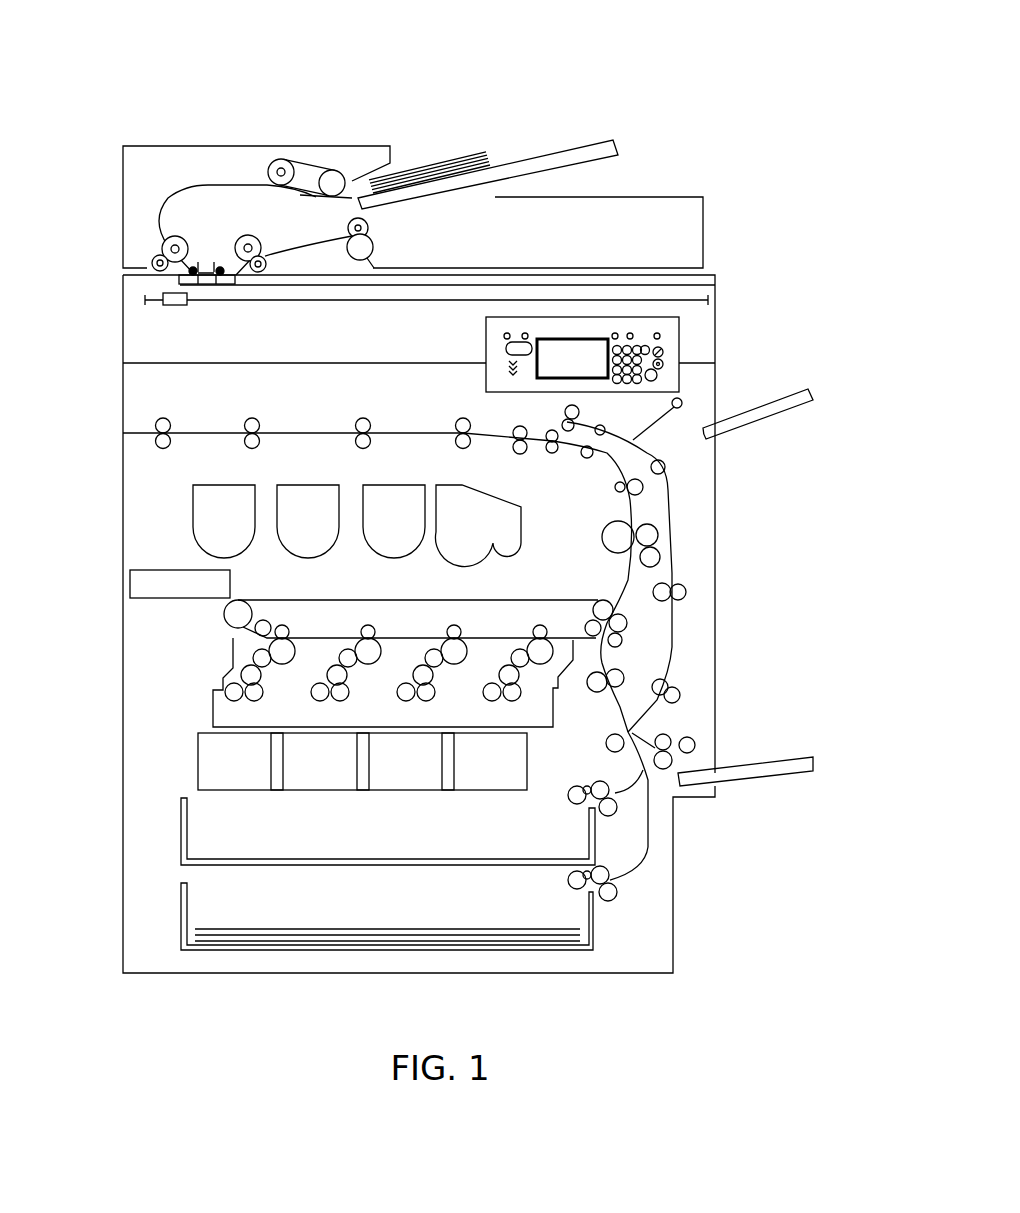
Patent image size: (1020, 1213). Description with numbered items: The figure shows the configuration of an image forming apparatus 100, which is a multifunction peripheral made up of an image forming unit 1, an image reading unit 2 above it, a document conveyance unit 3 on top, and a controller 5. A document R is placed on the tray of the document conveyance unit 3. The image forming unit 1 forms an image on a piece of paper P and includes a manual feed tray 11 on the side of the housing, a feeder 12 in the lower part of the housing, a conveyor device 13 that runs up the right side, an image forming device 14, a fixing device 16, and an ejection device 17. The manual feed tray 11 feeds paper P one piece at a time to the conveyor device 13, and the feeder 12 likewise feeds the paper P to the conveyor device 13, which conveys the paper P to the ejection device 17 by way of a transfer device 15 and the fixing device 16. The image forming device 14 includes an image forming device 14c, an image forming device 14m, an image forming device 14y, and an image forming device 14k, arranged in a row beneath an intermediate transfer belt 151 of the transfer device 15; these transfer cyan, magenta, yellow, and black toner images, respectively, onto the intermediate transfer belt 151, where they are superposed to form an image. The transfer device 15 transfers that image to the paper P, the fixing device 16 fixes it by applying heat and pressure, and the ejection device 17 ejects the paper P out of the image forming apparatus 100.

The image forming apparatus 100 is at (627, 82).
The image forming unit 1 is at (748, 495).
The image reading unit 2 is at (720, 308).
The document conveyance unit 3 is at (720, 240).
The document R is at (470, 157).
The controller 5 is at (130, 584).
The manual feed tray 11 is at (753, 753).
The feeder 12 is at (172, 905).
The conveyor device 13 is at (297, 427).
The image forming device 14 is at (162, 705).
The image forming device 14c is at (297, 658).
The image forming device 14m is at (383, 658).
The image forming device 14y is at (469, 658).
The image forming device 14k is at (555, 655).
The transfer device 15 is at (208, 610).
The intermediate transfer belt 151 is at (268, 598).
The fixing device 16 is at (605, 515).
The ejection device 17 is at (158, 416).
The paper P is at (280, 944).